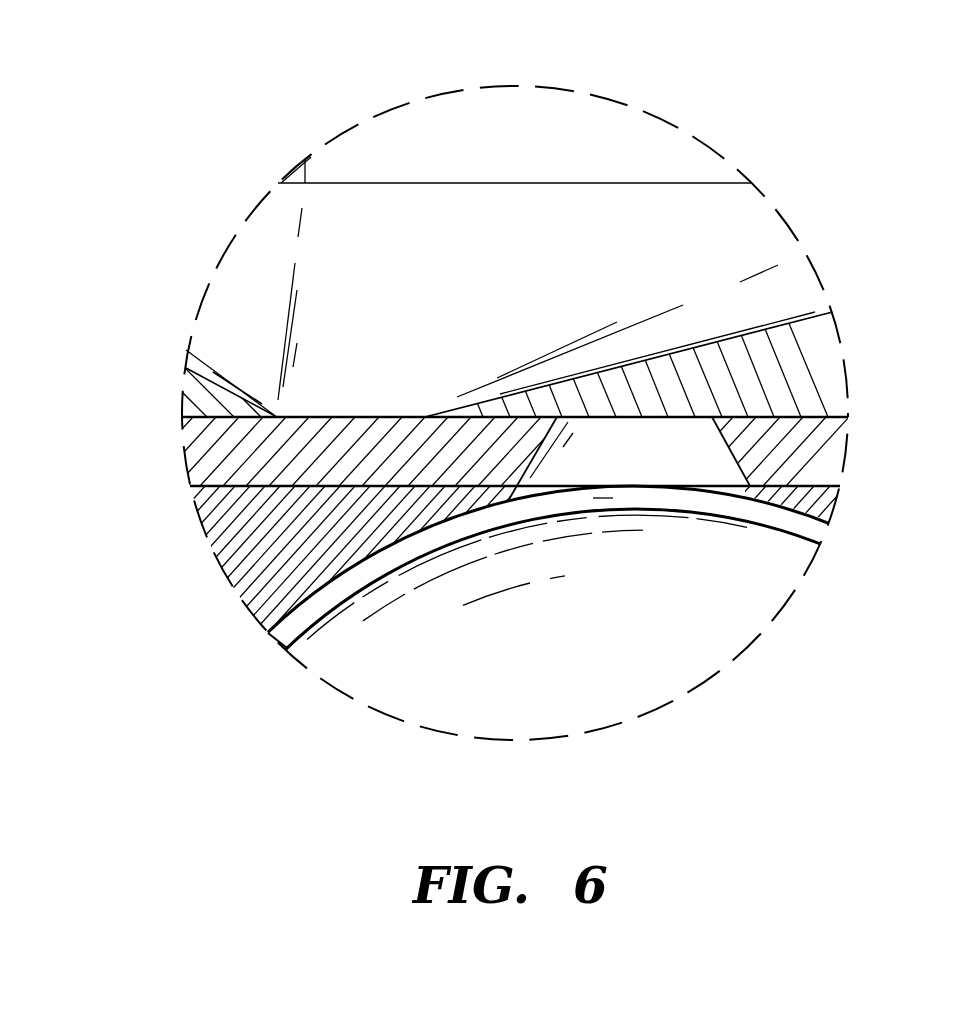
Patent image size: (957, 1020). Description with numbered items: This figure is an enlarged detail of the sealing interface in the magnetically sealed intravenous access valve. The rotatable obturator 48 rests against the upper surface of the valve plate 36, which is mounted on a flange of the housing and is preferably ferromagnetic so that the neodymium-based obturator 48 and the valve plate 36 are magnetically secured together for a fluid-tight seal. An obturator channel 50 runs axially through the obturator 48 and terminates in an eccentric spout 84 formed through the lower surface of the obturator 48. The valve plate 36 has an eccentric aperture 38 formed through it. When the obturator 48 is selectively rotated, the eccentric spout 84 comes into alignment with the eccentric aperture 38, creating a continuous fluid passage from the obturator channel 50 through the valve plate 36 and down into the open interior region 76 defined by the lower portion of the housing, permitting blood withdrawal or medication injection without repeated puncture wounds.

The valve plate 36 is at (217, 465).
The eccentric aperture 38 is at (704, 466).
The rotatable obturator 48 is at (832, 363).
The obturator channel 50 is at (405, 208).
The open interior region 76 is at (710, 633).
The eccentric spout 84 is at (312, 406).